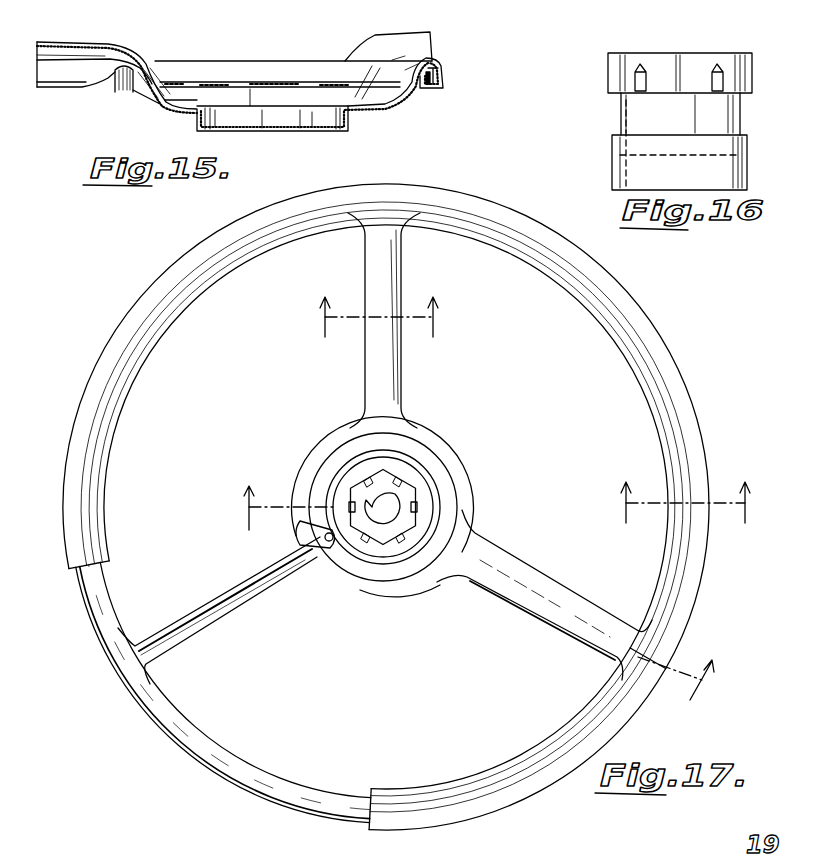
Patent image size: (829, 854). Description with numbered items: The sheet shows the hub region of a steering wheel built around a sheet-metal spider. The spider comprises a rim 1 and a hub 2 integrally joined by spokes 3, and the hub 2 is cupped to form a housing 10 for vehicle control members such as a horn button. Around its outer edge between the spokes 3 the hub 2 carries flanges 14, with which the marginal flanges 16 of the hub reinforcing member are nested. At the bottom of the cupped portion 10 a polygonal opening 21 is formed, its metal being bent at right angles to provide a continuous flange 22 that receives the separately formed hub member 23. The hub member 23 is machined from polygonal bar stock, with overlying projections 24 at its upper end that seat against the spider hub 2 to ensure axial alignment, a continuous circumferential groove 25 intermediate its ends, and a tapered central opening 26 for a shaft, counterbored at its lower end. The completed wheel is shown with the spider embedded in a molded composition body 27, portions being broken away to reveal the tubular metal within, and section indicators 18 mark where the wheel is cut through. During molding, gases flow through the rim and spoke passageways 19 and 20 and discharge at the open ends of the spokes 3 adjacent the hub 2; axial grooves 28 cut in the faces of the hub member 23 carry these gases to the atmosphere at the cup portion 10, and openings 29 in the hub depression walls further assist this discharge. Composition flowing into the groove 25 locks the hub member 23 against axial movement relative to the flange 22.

In FIG. 17, the rim 1 is at (262, 768).
In FIG. 15, the hub 2 is at (206, 60).
In FIG. 17, the hub 2 is at (350, 568).
In FIG. 15, the spokes 3 is at (40, 37).
In FIG. 17, the spokes 3 is at (215, 625).
In FIG. 15, the housing 10 is at (164, 61).
In FIG. 17, the housing 10 is at (500, 446).
In FIG. 15, the flanges 14 is at (417, 57).
In FIG. 15, the marginal flanges 16 is at (430, 90).
In FIG. 17, the section line 18- 18 is at (470, 612).
In FIG. 17, the rim passageway 19 is at (677, 520).
In FIG. 15, the spoke passageway 20 is at (62, 65).
In FIG. 17, the spoke passageway 20 is at (375, 334).
In FIG. 15, the opening 21 is at (258, 108).
In FIG. 15, the flange 22 is at (340, 131).
In FIG. 16, the hub member 23 is at (745, 150).
In FIG. 16, the overlying projections 24 is at (608, 57).
In FIG. 16, the circumferential groove 25 is at (742, 110).
In FIG. 16, the central opening 26 is at (632, 116).
In FIG. 17, the central opening 26 is at (386, 500).
In FIG. 17, the composition body 27 is at (400, 831).
In FIG. 16, the axial grooves 28 is at (680, 54).
In FIG. 17, the axial grooves 28 is at (417, 506).
In FIG. 15, the openings 29 is at (152, 102).
In FIG. 17, the openings 29 is at (312, 570).